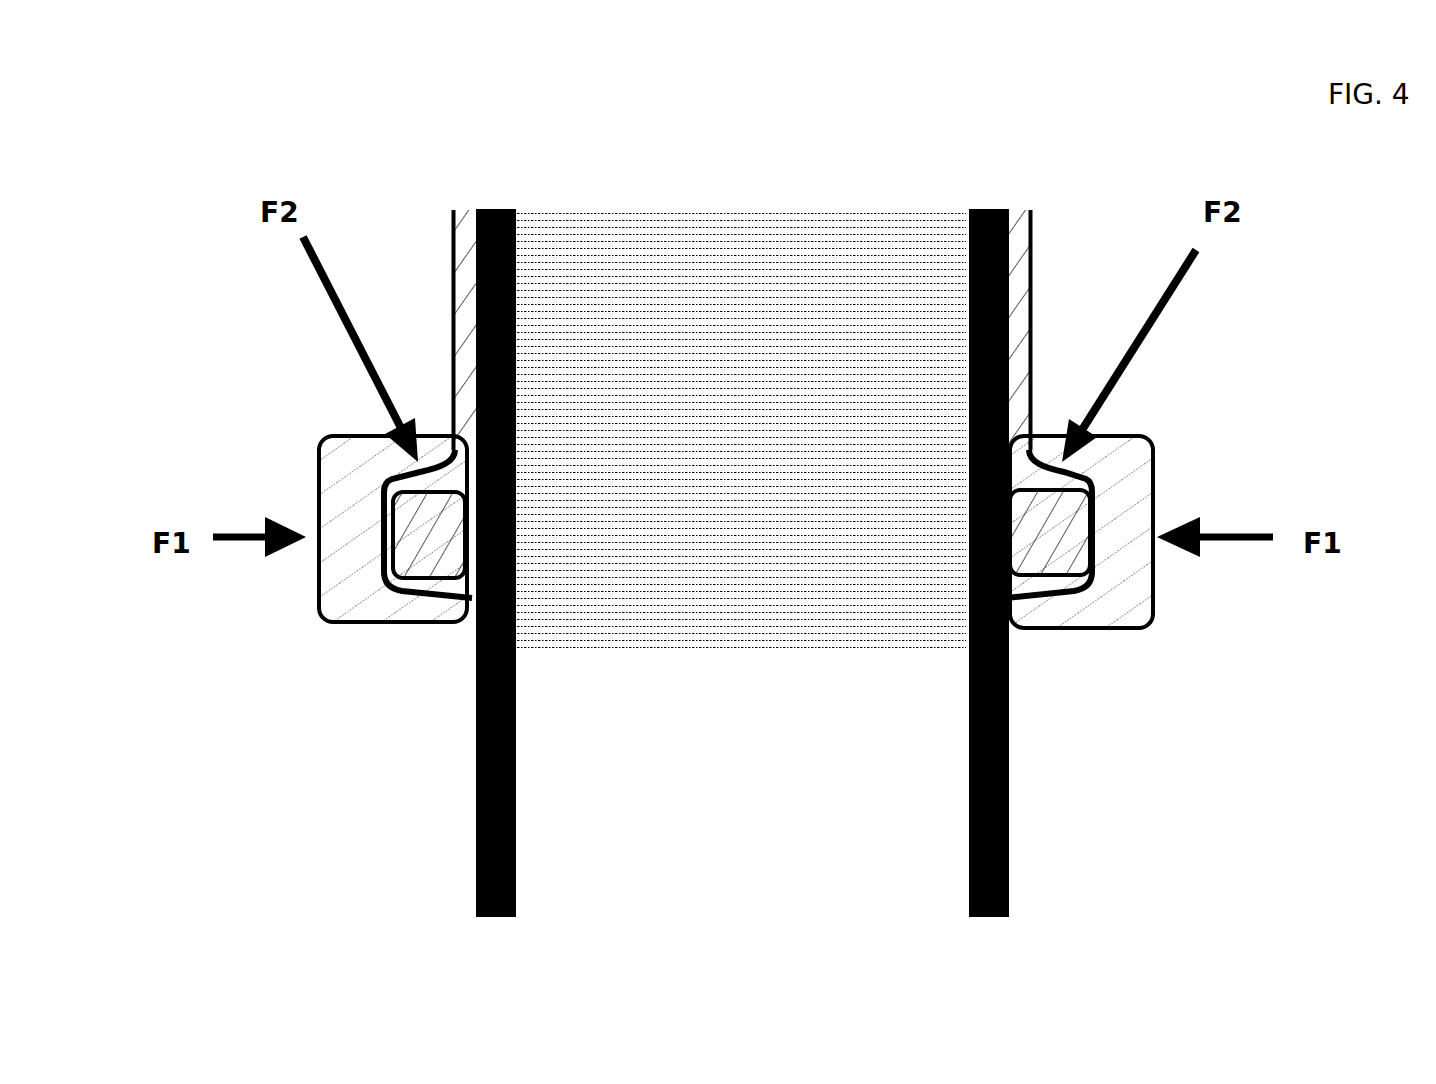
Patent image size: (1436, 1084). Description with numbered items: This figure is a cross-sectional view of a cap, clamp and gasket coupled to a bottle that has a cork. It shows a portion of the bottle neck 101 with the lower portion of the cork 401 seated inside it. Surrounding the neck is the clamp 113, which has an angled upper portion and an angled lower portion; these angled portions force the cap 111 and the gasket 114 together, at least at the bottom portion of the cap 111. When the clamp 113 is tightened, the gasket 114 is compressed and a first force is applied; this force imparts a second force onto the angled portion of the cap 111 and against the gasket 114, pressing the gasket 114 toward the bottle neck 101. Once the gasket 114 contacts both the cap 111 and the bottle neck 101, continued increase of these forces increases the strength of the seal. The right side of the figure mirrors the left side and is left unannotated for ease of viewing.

The bottle neck 101 is at (465, 851).
The cap 111 is at (447, 288).
The clamp 113 is at (315, 563).
The gasket 114 is at (438, 544).
The cork 401 is at (732, 205).